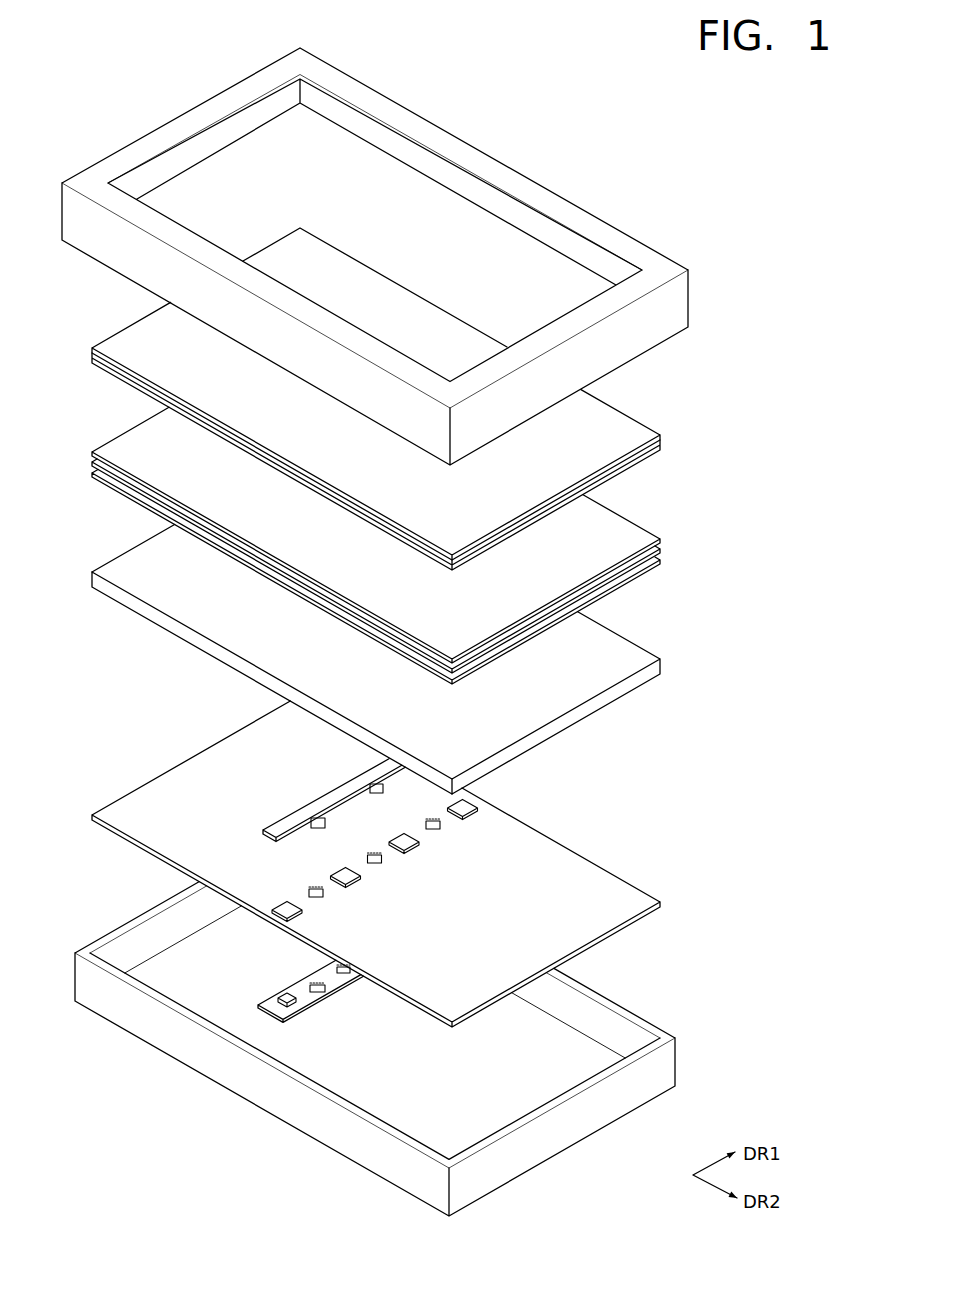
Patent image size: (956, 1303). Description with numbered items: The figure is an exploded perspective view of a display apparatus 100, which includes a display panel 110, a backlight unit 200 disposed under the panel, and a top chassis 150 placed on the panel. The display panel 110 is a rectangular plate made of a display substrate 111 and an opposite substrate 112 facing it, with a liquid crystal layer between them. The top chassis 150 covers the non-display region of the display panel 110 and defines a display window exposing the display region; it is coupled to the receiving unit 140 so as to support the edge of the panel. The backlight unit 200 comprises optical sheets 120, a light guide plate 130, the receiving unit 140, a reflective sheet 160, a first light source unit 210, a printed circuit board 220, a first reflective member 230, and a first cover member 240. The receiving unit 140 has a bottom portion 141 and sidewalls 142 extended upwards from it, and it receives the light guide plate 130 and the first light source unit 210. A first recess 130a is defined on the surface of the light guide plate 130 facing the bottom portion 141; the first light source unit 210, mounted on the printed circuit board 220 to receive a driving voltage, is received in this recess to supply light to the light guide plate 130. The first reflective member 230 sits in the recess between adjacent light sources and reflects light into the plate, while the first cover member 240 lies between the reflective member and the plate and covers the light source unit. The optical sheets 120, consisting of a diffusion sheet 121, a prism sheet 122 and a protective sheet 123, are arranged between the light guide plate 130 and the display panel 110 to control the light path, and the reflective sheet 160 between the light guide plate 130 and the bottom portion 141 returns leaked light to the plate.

The display apparatus 100 is at (530, 92).
The display panel 110 is at (446, 399).
The display substrate 111 is at (663, 443).
The opposite substrate 112 is at (622, 427).
The optical sheets 120 is at (446, 545).
The diffusion sheet 121 is at (662, 563).
The prism sheet 122 is at (660, 548).
The protective sheet 123 is at (625, 533).
The light guide plate 130 is at (442, 660).
The first recess 130a is at (262, 688).
The receiving unit 140 is at (438, 1049).
The bottom portion 141 is at (557, 1045).
The sidewalls 142 is at (672, 1067).
The top chassis 150 is at (682, 302).
The reflective sheet 160 is at (612, 890).
The backlight unit 200 is at (800, 1080).
The first light source unit 210 is at (282, 993).
The printed circuit board 220 is at (273, 1013).
The first reflective member 230 is at (318, 818).
The first cover member 240 is at (343, 792).